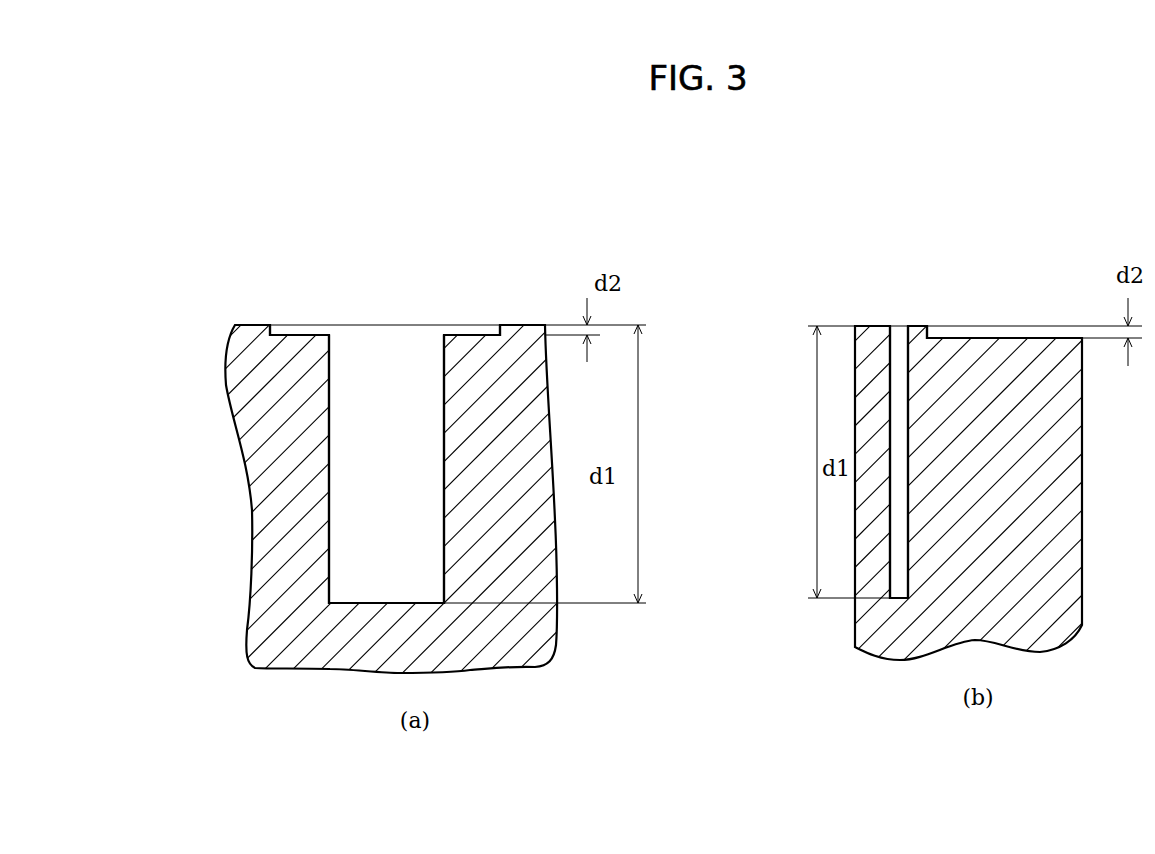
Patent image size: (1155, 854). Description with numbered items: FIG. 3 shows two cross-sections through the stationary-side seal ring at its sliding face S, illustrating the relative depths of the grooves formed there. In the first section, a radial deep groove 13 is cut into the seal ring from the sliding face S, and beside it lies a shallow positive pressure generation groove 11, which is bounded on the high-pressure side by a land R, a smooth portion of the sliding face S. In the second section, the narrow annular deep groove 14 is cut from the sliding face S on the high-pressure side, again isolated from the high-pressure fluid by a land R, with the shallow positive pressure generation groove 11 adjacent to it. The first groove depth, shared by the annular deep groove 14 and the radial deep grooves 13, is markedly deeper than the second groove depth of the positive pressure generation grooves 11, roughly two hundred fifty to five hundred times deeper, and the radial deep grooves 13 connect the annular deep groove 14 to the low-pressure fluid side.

The positive pressure generation groove 11 is at (310, 323).
The radial deep groove 13 is at (423, 353).
The annular deep groove 14 is at (895, 325).
The sliding face S is at (242, 323).
The land R is at (522, 323).